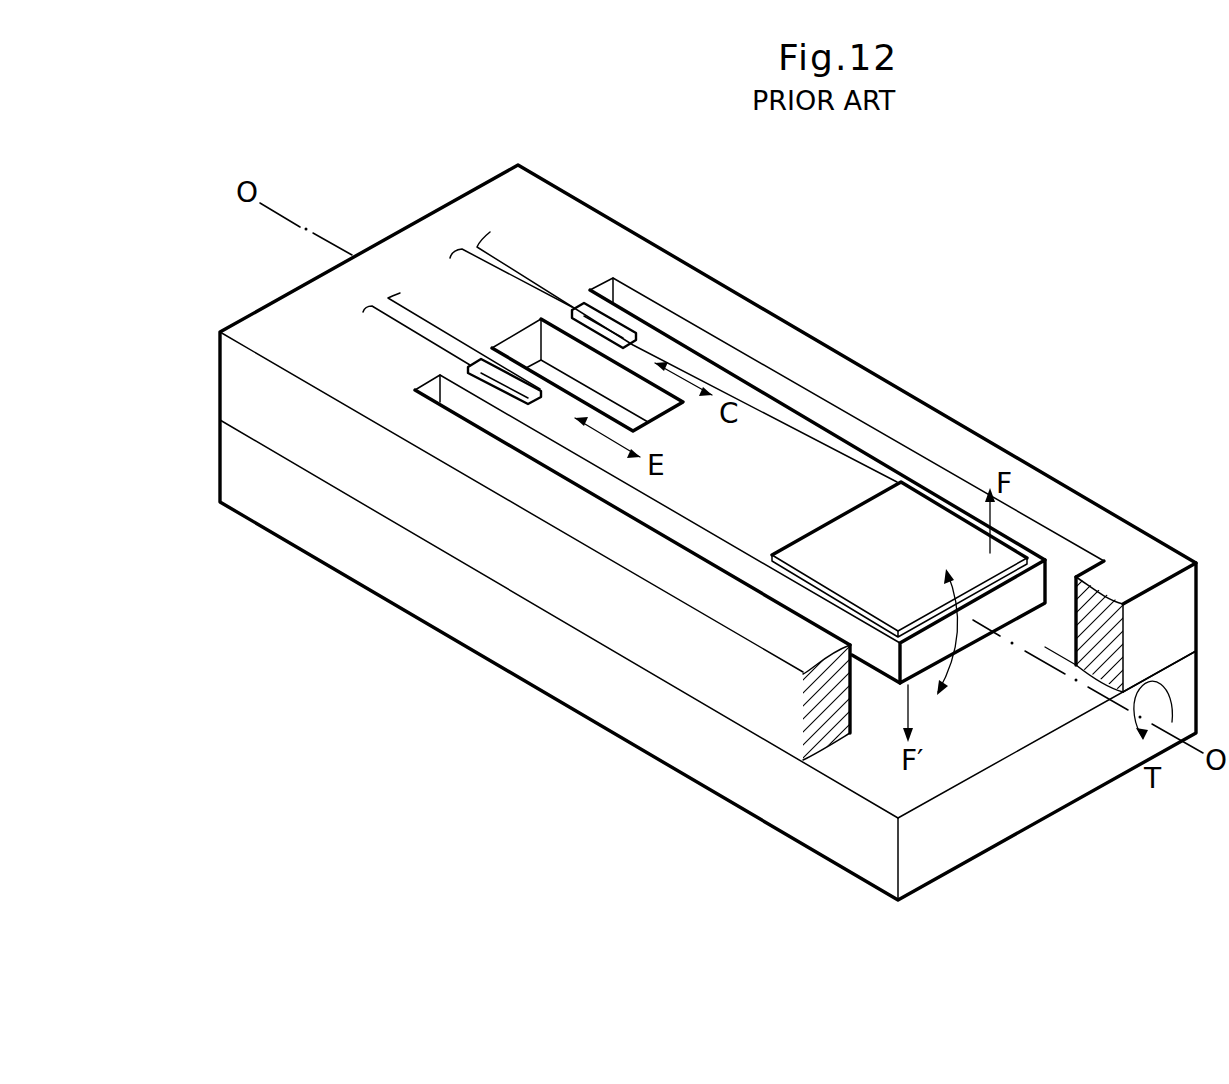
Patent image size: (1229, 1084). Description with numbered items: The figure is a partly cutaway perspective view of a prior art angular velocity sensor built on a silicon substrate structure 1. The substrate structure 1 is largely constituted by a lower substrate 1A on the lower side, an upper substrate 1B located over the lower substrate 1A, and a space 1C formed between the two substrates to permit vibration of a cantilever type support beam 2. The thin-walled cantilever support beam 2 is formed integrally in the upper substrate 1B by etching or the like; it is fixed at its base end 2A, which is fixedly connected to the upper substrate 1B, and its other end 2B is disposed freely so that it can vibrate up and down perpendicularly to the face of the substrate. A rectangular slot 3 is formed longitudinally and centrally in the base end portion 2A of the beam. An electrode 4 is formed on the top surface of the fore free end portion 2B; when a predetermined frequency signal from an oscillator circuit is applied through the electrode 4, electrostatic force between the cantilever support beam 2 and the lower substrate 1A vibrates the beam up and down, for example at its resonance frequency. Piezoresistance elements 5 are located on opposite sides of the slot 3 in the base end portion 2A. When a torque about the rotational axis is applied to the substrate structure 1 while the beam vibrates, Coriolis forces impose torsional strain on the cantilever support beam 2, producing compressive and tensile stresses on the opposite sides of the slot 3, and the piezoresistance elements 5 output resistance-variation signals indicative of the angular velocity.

The silicon substrate structure 1 is at (410, 615).
The lower substrate 1A is at (577, 667).
The upper substrate 1B is at (253, 400).
The space 1C is at (1070, 563).
The cantilever support beam 2 is at (772, 457).
The base end 2A is at (645, 357).
The free end 2B is at (1033, 560).
The rectangular slot 3 is at (513, 343).
The electrode 4 is at (903, 520).
The piezoresistance elements 5 is at (600, 327).